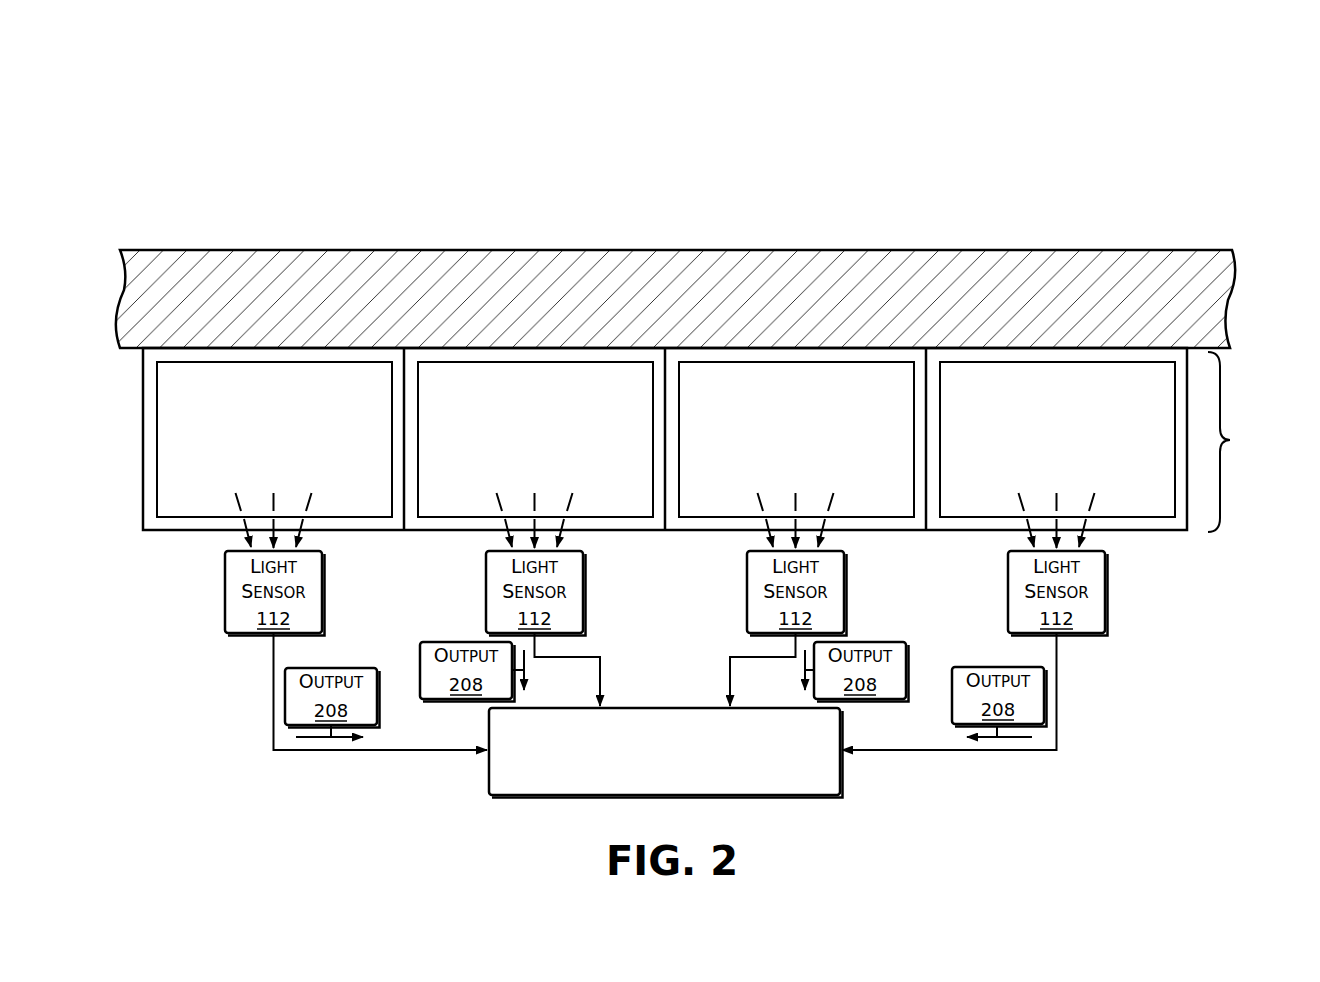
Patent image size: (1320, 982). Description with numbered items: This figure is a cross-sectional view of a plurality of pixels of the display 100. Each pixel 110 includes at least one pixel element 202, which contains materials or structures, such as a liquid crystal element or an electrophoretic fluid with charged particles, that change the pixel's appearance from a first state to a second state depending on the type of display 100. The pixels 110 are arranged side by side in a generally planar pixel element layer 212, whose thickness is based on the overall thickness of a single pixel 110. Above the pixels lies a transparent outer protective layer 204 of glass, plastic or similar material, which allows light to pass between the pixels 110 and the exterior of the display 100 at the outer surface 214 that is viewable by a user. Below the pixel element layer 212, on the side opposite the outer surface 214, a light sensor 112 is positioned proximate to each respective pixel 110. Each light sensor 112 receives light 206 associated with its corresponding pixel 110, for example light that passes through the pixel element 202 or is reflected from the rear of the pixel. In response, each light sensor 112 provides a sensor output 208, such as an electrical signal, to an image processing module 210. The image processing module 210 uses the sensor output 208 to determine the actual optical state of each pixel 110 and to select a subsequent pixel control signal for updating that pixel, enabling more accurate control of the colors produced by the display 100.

The display 100 is at (88, 75).
The pixel 110 is at (176, 547).
The light sensor 112 is at (666, 650).
The pixel element 202 is at (338, 392).
The transparent outer protective layer 204 is at (600, 249).
The light 206 is at (319, 539).
The sensor output 208 is at (666, 689).
The image processing module 210 is at (648, 776).
The pixel element layer 212 is at (1230, 440).
The outer surface 214 is at (690, 233).